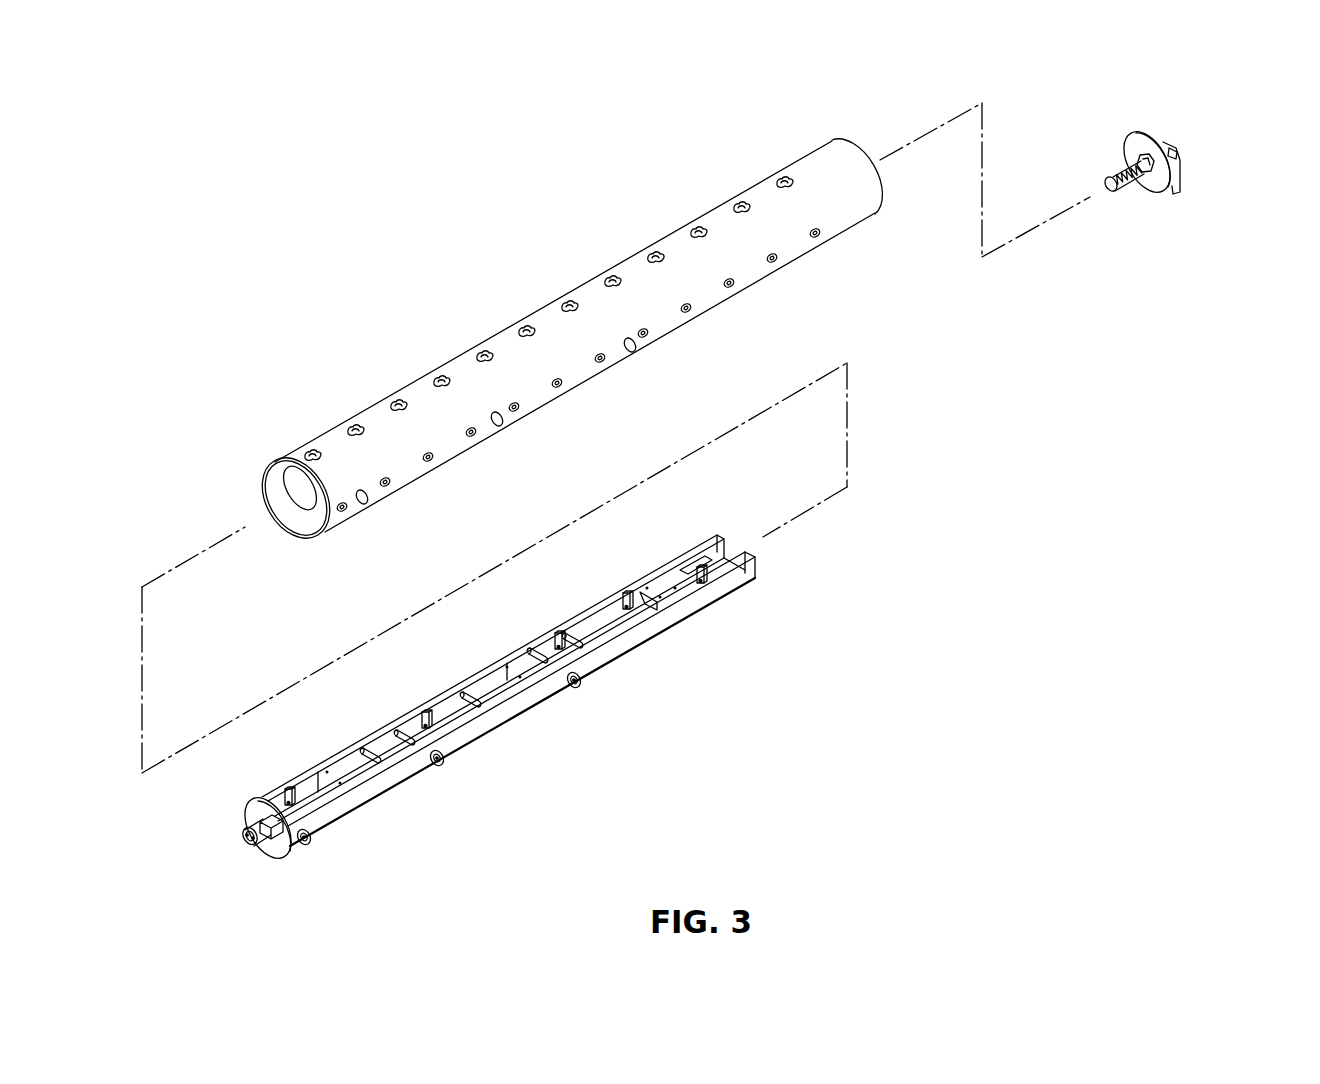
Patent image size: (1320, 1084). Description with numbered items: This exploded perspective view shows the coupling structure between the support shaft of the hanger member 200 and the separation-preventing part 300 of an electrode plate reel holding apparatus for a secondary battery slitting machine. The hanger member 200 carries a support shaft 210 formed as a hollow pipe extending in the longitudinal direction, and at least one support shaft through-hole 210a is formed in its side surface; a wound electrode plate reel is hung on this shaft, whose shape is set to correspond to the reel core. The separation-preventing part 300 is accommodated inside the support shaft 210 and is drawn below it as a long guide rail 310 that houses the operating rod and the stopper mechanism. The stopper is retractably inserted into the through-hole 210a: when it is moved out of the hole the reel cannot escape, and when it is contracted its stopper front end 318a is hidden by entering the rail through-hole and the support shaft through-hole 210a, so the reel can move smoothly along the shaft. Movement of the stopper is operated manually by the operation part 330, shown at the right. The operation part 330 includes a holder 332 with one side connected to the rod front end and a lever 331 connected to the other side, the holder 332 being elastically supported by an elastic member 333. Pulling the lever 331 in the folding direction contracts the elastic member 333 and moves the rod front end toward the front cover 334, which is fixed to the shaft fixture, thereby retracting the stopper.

The hanger member 200 is at (566, 344).
The support shaft 210 is at (550, 312).
The support shaft through-hole 210a is at (505, 424).
The separation-preventing part 300 is at (533, 700).
The guide rail 310 is at (717, 595).
The stopper front end 318a is at (440, 763).
The operation part 330 is at (1158, 203).
The lever 331 is at (1180, 182).
The holder 332 is at (1158, 216).
The elastic member 333 is at (1123, 163).
The front cover 334 is at (1145, 143).